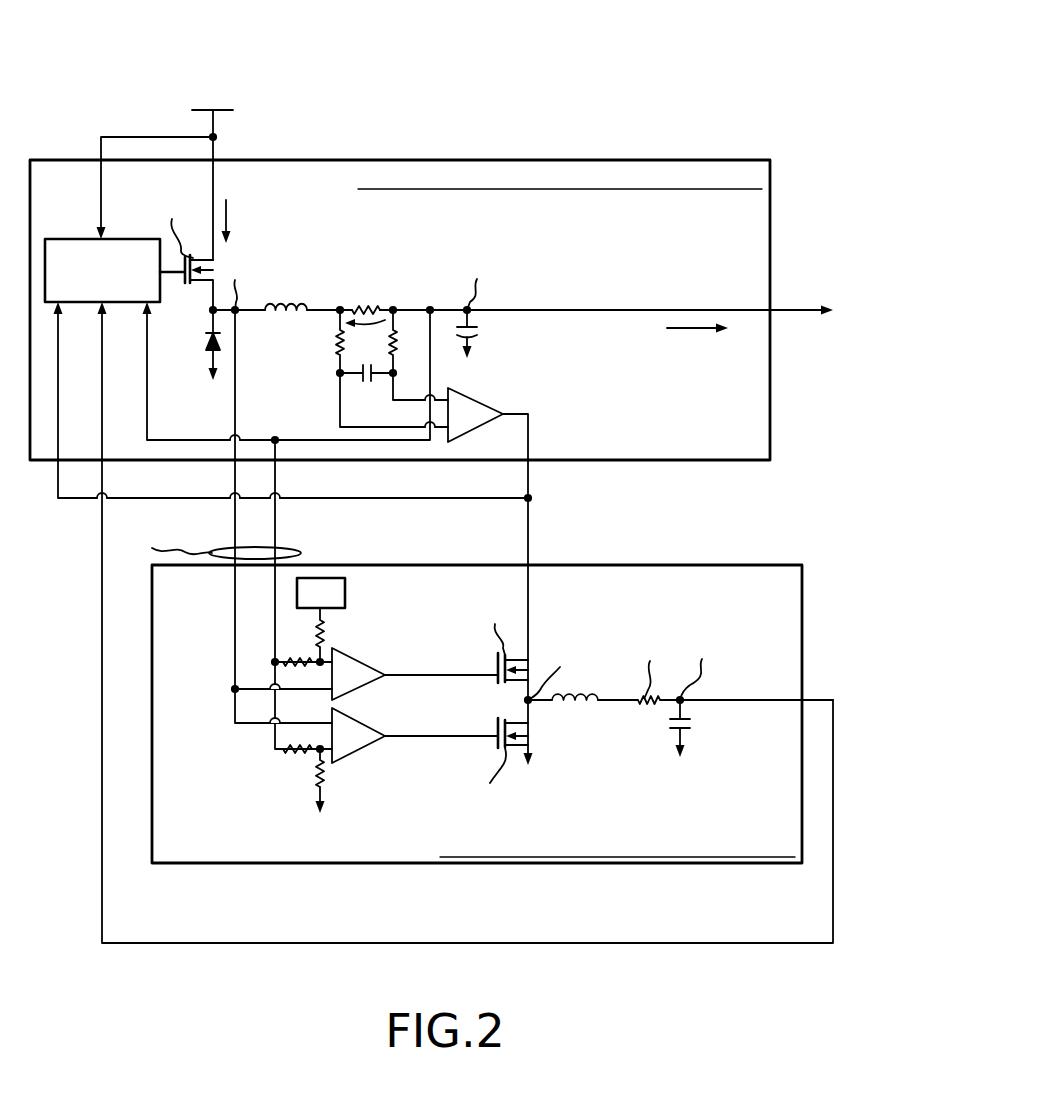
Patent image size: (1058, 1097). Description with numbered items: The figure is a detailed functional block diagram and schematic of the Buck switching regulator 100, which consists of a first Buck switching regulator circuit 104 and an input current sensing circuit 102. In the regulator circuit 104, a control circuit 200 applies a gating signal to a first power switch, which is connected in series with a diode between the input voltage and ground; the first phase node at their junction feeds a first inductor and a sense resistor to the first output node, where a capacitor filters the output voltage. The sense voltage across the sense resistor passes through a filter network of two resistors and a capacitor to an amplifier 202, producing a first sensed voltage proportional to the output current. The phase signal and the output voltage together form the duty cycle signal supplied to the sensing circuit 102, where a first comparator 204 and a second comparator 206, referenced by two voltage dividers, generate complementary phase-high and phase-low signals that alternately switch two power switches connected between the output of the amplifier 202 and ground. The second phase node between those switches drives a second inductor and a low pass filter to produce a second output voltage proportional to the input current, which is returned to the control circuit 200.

The Buck switching regulator 100 is at (605, 89).
The input current sensing circuit 102 is at (650, 565).
The first Buck switching regulator circuit 104 is at (355, 160).
The control circuit 200 is at (53, 239).
The amplifier 202 is at (486, 406).
The first comparator 204 is at (366, 665).
The second comparator 206 is at (362, 724).